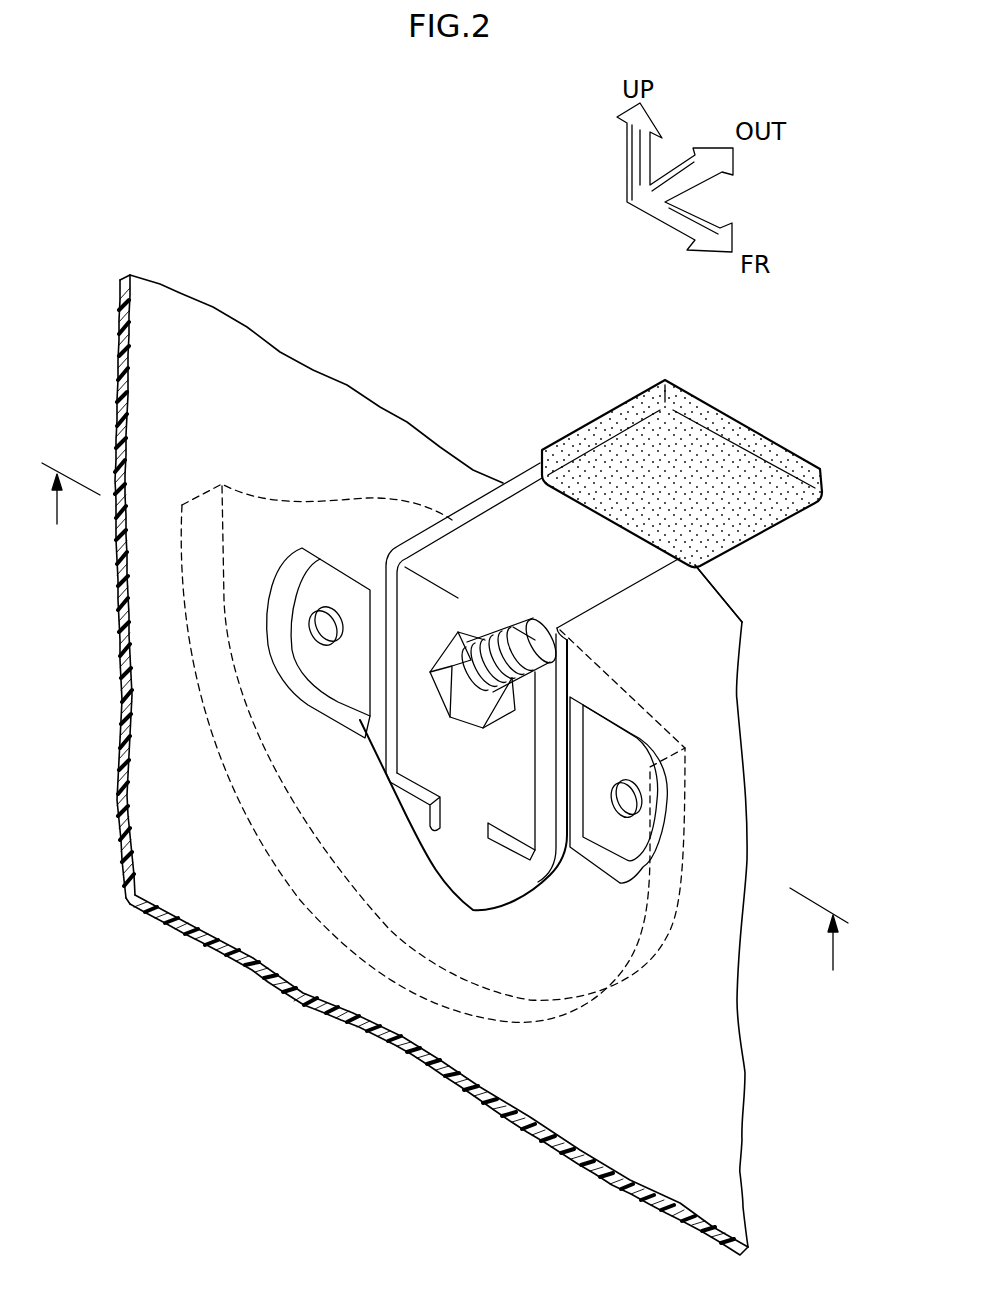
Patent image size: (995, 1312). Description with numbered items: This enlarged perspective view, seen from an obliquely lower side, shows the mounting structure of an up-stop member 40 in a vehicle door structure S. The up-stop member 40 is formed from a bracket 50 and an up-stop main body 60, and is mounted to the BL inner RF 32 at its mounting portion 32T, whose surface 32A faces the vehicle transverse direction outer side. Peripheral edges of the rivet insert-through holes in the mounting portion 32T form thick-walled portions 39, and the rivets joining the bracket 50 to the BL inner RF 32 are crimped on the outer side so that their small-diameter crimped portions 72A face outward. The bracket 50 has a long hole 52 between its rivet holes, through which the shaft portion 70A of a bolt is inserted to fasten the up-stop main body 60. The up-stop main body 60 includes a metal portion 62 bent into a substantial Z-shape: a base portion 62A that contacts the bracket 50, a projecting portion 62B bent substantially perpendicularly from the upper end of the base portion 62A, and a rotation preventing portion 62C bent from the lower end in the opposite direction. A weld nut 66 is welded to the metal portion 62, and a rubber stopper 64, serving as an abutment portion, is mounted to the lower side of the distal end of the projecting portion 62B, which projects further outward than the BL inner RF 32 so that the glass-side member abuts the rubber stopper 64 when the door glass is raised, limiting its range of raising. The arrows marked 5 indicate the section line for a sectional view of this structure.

The vehicle door structure S is at (810, 348).
The BL inner RF 32 is at (449, 727).
The mounting portion of the BL inner RF 32T is at (122, 273).
The surface at the vehicle transverse direction outer side 32A is at (703, 1102).
The section line of FIG. 5 is at (445, 731).
The bracket 50 is at (346, 945).
The long hole 52 is at (470, 878).
The thick-walled portion 39 is at (327, 678).
The crimped portion 72A is at (327, 623).
The up-stop main body 60 is at (572, 408).
The metal portion 62 is at (510, 468).
The base portion 62A is at (407, 774).
The projecting portion 62B is at (637, 583).
The rotation preventing portion 62C is at (460, 853).
The shaft portion of the bolt 70A is at (514, 628).
The weld nut 66 is at (490, 730).
The rubber stopper 64 is at (624, 412).
The up-stop member 40 is at (712, 580).